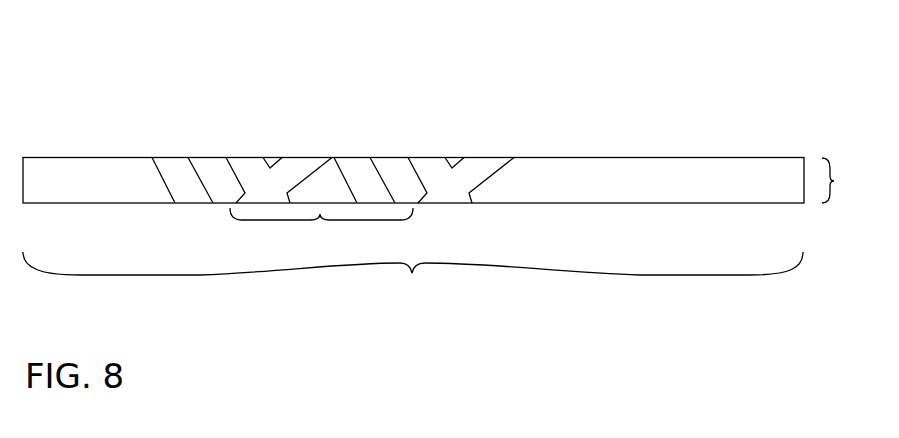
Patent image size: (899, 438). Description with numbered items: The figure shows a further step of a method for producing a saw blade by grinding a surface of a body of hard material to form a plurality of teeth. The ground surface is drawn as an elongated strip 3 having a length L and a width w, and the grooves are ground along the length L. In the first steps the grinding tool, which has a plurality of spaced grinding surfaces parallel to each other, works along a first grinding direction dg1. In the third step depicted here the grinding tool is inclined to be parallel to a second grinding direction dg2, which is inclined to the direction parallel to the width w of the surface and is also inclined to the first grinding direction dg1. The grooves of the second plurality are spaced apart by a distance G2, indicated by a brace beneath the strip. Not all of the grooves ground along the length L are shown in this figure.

The strip / bar 3 is at (680, 190).
The first grinding direction dg1 is at (214, 236).
The second grinding direction dg2 is at (247, 212).
The distance between grooves of the second plurality of grooves G2 is at (321, 234).
The length L is at (413, 286).
The width w is at (840, 180).